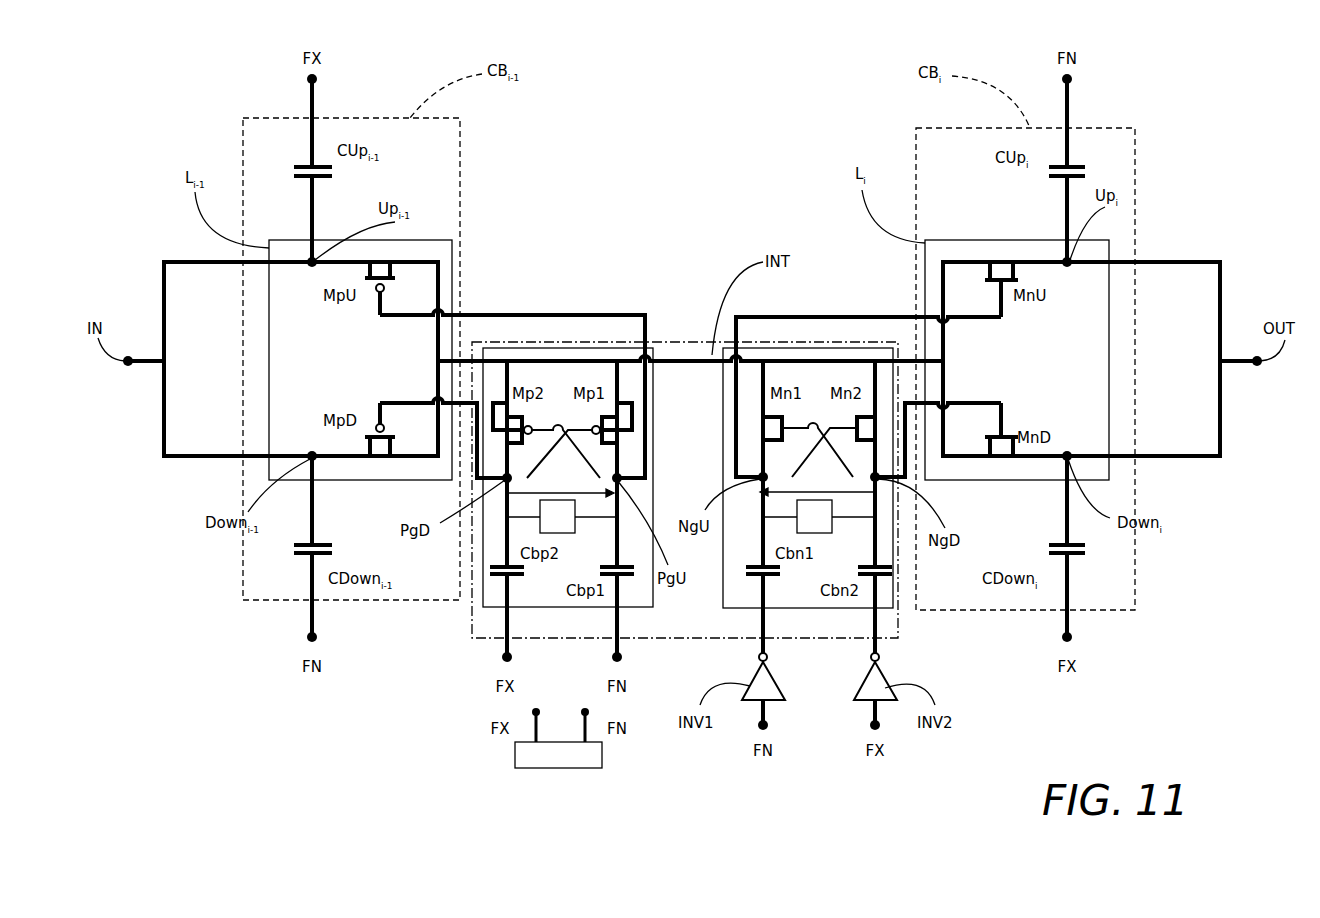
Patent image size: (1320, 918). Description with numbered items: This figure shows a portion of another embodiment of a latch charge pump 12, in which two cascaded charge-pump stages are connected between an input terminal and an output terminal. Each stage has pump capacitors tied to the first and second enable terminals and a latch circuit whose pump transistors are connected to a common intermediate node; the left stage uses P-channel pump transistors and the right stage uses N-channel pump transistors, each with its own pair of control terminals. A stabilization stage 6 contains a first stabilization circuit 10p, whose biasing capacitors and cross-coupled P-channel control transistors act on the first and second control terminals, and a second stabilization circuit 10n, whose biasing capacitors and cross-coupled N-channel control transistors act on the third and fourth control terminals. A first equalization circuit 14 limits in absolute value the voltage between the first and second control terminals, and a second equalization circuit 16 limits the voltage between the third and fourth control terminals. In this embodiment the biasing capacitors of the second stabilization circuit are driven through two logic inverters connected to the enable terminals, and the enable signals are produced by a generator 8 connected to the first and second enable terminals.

The charge pump 12 is at (757, 137).
The stabilization stage 6 is at (673, 341).
The first stabilization circuit 10p is at (483, 604).
The second stabilization circuit 10n is at (885, 608).
The first equalization circuit 14 is at (562, 516).
The second equalization circuit 16 is at (819, 516).
The generator 8 is at (558, 738).